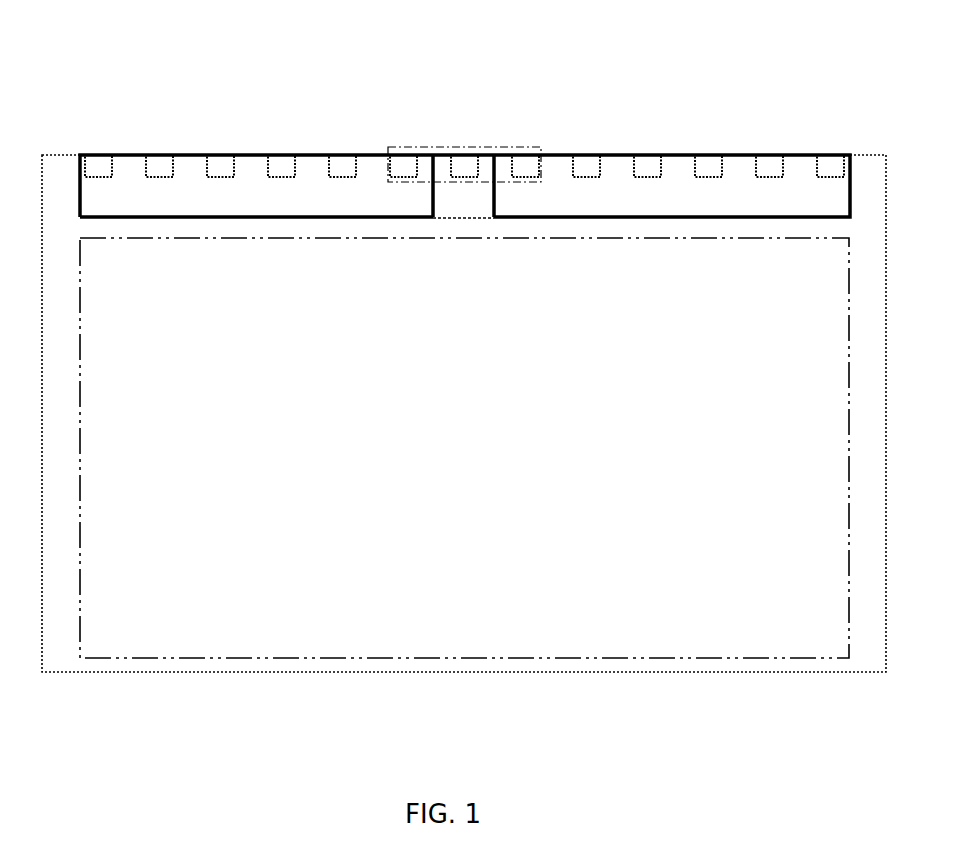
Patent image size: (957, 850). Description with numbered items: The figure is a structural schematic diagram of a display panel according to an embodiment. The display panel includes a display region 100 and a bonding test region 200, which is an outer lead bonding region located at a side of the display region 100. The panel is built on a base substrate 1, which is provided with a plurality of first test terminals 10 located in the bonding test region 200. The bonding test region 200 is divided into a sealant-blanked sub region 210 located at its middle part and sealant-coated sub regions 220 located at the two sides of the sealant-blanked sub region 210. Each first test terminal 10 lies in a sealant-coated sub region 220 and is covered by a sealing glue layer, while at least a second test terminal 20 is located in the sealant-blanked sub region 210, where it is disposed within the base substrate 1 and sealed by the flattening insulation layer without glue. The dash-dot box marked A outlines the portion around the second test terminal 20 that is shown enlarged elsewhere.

The base substrate 1 is at (54, 613).
The display region 100 is at (528, 566).
The bonding test region 200 is at (326, 63).
The sealant-coated sub region 220 is at (263, 187).
The sealant-blanked sub region 210 is at (450, 196).
The first test terminal 10 is at (100, 166).
The second test terminal 20 is at (464, 166).
The region A is at (465, 142).